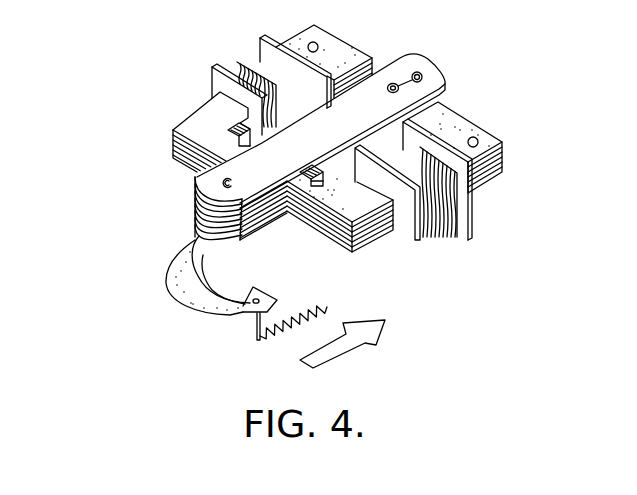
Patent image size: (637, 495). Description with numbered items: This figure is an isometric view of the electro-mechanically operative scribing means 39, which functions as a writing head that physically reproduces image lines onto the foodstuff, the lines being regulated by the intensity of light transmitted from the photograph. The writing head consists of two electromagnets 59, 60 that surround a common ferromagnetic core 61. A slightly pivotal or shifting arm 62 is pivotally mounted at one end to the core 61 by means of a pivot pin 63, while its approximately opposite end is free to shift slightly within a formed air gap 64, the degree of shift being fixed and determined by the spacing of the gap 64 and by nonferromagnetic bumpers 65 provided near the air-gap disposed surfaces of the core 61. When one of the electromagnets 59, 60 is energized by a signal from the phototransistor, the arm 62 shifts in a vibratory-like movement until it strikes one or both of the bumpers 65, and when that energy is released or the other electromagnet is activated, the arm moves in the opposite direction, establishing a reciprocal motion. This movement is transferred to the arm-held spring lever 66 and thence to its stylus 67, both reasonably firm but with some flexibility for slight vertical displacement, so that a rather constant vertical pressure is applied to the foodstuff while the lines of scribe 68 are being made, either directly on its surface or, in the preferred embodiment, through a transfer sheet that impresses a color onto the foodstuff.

The scribing means 39 is at (150, 112).
The electromagnet 59 is at (247, 63).
The electromagnet 60 is at (448, 230).
The ferromagnetic core 61 is at (193, 117).
The arm 62 is at (193, 200).
The pivot pin 63 is at (446, 81).
The air gap 64 is at (195, 179).
The nonferromagnetic bumpers 65 is at (230, 133).
The spring lever 66 is at (178, 281).
The stylus 67 is at (253, 328).
The lines of scribe 68 is at (327, 307).